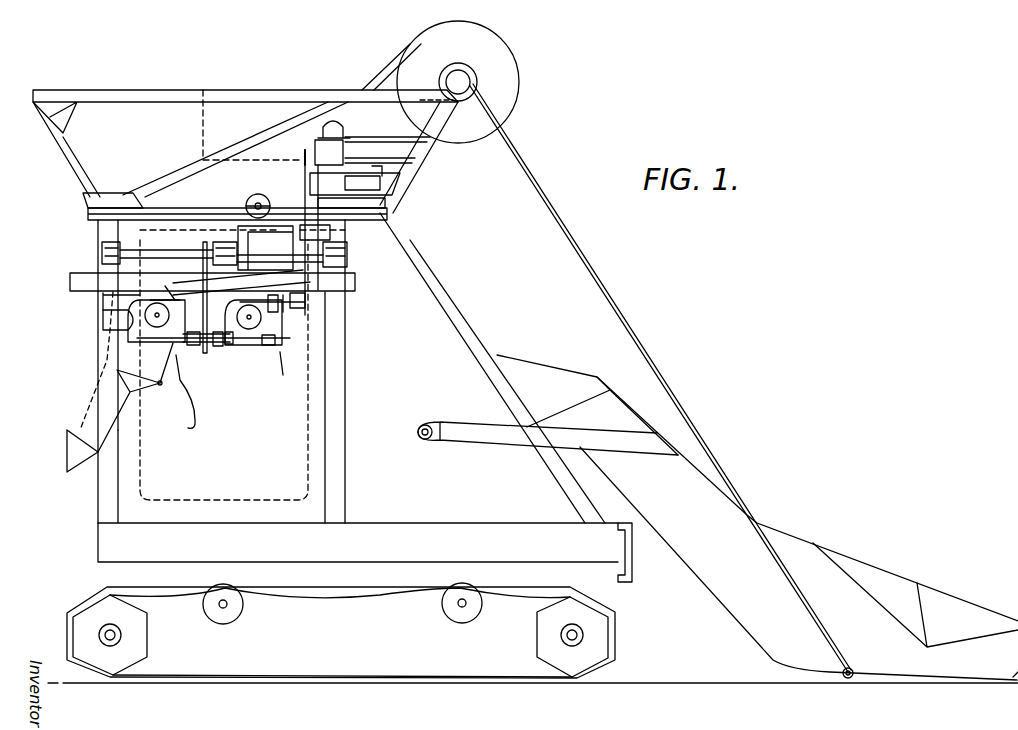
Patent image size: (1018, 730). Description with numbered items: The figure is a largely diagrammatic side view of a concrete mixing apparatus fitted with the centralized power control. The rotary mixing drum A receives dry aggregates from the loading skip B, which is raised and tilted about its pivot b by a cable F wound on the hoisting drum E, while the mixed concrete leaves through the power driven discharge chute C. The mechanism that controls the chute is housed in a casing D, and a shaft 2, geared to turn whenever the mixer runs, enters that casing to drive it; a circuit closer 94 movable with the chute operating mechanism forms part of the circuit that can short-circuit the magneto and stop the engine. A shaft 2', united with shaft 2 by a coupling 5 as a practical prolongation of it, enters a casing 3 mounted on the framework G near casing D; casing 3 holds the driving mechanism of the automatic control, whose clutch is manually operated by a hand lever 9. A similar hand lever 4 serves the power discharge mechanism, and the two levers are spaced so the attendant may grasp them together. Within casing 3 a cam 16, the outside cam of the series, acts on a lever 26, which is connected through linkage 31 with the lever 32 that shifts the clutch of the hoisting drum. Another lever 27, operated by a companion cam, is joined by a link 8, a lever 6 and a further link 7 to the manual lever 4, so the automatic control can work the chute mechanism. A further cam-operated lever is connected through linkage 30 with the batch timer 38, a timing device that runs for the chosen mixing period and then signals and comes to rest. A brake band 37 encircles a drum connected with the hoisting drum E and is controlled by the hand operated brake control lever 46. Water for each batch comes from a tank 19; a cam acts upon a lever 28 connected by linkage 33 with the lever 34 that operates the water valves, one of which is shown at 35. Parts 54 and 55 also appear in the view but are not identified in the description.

The hopper gate lever 54 is at (307, 147).
The batch timer 38 is at (313, 130).
The cable F is at (380, 70).
The tank 19 is at (203, 135).
The gate latch 55 is at (347, 122).
The water valve 35 is at (348, 190).
The lever 34 is at (380, 195).
The hoisting drum E is at (257, 243).
The linkage 30 is at (307, 213).
The linkage 33 is at (318, 238).
The lever 32 is at (205, 285).
The brake band 37 is at (293, 262).
The linkage 31 is at (355, 282).
The lever 28 is at (300, 295).
The lever 26 is at (290, 303).
The lever 27 is at (275, 300).
The casing 3 is at (267, 335).
The hand lever 9 is at (280, 367).
The cam 16 is at (250, 335).
The shaft 2' is at (228, 364).
The coupling 5 is at (213, 348).
The shaft 2 is at (213, 367).
The link 7 is at (173, 348).
The hand lever 4 is at (195, 420).
The brake control lever 46 is at (208, 295).
The link 8 is at (173, 295).
The lever 6 is at (135, 297).
The casing D is at (138, 328).
The circuit closer 94 is at (147, 343).
The discharge chute C is at (80, 433).
The framework G is at (337, 407).
The rotary mixing drum A is at (330, 452).
The pivot b is at (425, 440).
The loading skip B is at (795, 555).